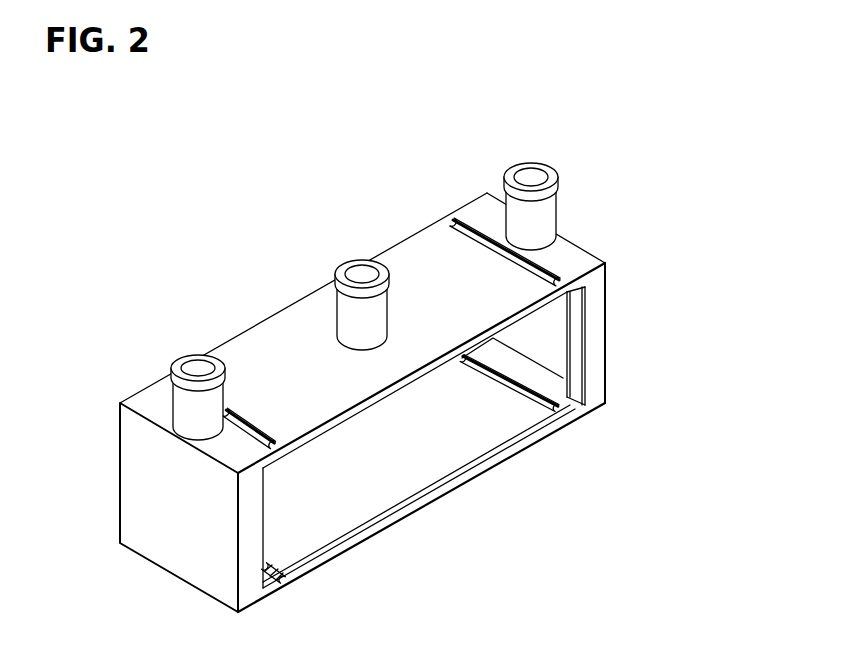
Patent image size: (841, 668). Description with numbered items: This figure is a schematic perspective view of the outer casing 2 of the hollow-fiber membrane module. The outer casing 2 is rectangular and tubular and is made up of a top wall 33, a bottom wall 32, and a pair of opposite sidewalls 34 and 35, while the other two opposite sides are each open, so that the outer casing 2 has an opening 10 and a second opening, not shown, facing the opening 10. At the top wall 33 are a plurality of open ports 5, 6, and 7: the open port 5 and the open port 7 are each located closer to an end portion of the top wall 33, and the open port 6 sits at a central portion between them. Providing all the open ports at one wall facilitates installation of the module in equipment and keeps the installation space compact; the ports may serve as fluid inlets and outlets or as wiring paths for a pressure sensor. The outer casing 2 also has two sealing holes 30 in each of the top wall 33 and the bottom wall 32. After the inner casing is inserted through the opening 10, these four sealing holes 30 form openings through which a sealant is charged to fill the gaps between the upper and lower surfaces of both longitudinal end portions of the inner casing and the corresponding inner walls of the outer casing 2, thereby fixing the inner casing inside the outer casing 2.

The outer casing 2 is at (605, 160).
The open port 5 is at (182, 415).
The open port 6 is at (345, 308).
The open port 7 is at (547, 213).
The opening 10 is at (443, 497).
The sealing hole 30 is at (557, 262).
The bottom wall 32 is at (488, 436).
The top wall 33 is at (418, 252).
The sidewall 34 is at (167, 520).
The sidewall 35 is at (552, 320).